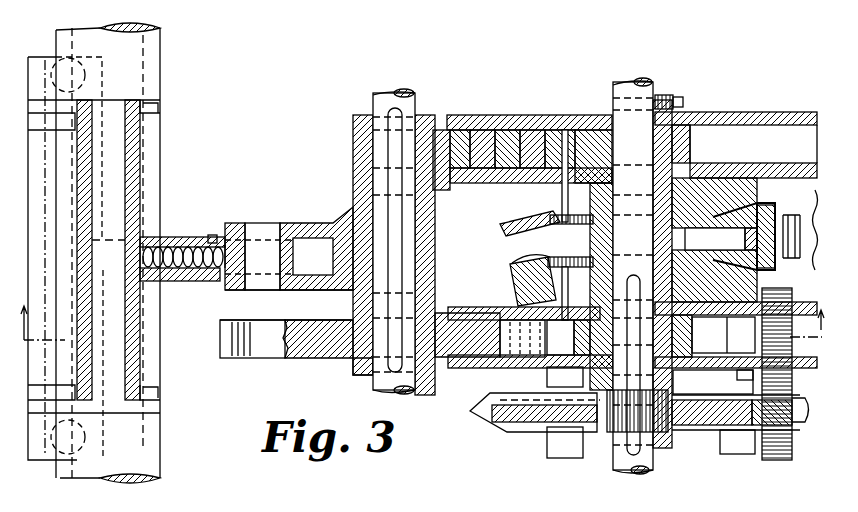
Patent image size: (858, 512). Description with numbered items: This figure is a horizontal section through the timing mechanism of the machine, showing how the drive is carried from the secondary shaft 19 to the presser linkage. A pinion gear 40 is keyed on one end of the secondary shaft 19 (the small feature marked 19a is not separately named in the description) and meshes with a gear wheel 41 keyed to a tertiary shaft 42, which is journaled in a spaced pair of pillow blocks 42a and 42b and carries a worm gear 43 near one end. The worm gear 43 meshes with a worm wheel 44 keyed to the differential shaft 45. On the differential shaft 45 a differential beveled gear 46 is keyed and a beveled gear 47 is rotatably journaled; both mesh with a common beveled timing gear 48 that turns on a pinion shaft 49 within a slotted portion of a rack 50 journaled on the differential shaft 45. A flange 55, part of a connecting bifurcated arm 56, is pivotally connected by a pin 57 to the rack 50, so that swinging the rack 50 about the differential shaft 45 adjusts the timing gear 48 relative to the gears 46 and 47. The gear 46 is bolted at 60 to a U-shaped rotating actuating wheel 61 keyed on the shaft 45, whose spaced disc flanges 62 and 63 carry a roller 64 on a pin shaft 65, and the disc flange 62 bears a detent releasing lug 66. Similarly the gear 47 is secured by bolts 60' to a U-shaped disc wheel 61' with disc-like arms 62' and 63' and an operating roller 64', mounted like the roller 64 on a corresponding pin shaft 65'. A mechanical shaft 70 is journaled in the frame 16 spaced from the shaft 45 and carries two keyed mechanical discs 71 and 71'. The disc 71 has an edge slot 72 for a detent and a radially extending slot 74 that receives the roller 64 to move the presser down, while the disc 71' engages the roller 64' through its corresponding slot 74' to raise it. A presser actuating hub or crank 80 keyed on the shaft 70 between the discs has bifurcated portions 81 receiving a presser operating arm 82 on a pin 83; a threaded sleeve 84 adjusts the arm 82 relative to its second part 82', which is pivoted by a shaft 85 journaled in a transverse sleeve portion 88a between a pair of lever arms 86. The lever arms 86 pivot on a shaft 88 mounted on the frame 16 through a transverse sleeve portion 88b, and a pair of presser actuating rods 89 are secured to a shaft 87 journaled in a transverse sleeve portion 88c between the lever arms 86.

The frame 16 is at (500, 509).
The secondary shaft 19 is at (738, 271).
The opening 19a is at (740, 339).
The pinion gear 40 is at (745, 328).
The gear wheel 41 is at (774, 456).
The tertiary shaft 42 is at (800, 418).
The pillow block 42a is at (738, 446).
The pillow block 42b is at (568, 431).
The worm gear 43 is at (636, 470).
The worm wheel 44 is at (502, 432).
The differential shaft 45 is at (637, 80).
The differential beveled gear 46 is at (516, 276).
The beveled gear 47 is at (553, 221).
The timing gear 48 is at (753, 213).
The pinion shaft 49 is at (692, 238).
The rack 50 is at (656, 226).
The flange 55 is at (799, 227).
The connecting bifurcated arm 56 is at (728, 186).
The pin 57 is at (776, 222).
The bolts 60 is at (521, 257).
The bolts 60' is at (519, 239).
The U-shaped rotating actuating wheel 61 is at (570, 274).
The U-shaped disc wheel 61' is at (578, 153).
The disc flange 62 is at (461, 359).
The disc-like arm 62' is at (522, 169).
The disc flange 63 is at (521, 300).
The disc-like arm 63' is at (505, 81).
The roller 64 is at (568, 337).
The operating roller 64' is at (474, 115).
The pin shaft 65 is at (530, 357).
The shim 65' is at (506, 125).
The detent releasing lug 66 is at (745, 378).
The mechanical shaft 70 is at (382, 92).
The mechanical disc 71 is at (296, 342).
The mechanical disc 71' is at (389, 213).
The slot 72 is at (228, 349).
The radially extending slot 74 is at (520, 358).
The washer 74' is at (537, 107).
The presser actuating hub 80 is at (333, 222).
The bifurcated portions 81 is at (229, 228).
The presser operating arm 82 is at (182, 232).
The second arm part 82' is at (189, 220).
The pin 83 is at (262, 232).
The threaded sleeve 84 is at (191, 274).
The shaft 85 is at (112, 141).
The lever arms 86 is at (150, 112).
The shaft 87 is at (90, 258).
The shaft 88 is at (135, 479).
The transverse sleeve portion 88a is at (131, 162).
The transverse sleeve portion 88b is at (160, 184).
The transverse sleeve portion 88c is at (107, 306).
The presser actuating rods 89 is at (55, 68).